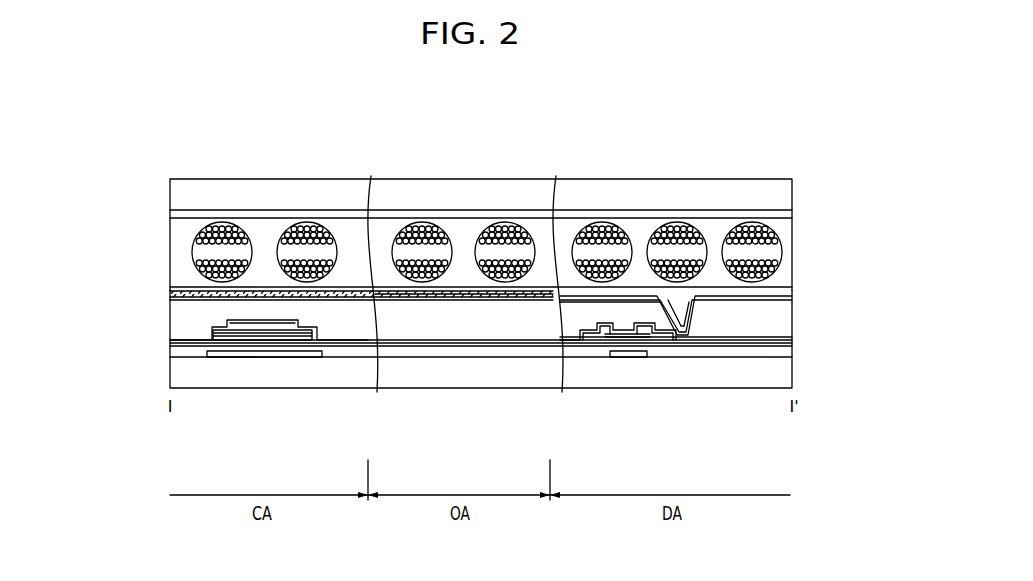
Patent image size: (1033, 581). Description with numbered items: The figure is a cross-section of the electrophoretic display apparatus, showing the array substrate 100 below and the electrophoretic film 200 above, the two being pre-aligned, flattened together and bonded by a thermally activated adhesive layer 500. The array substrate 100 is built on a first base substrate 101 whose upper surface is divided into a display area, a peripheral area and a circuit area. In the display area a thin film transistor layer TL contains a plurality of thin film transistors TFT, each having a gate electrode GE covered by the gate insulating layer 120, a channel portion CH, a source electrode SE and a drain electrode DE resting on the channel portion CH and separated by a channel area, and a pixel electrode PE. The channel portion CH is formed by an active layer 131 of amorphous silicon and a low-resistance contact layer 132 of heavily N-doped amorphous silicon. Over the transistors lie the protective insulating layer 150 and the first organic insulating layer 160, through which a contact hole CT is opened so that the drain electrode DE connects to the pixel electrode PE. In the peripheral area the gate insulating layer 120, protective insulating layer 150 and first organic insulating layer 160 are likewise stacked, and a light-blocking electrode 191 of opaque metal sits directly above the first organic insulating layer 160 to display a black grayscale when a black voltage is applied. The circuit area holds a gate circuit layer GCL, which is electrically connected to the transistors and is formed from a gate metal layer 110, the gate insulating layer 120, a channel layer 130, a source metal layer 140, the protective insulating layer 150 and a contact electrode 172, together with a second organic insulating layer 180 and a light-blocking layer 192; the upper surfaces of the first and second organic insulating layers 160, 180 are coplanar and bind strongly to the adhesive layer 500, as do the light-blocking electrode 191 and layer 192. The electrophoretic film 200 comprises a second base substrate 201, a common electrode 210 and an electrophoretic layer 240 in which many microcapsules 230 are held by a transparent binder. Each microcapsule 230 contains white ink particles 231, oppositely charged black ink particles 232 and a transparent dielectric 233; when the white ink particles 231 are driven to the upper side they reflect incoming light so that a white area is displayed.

The array substrate 100 is at (121, 277).
The first base substrate 101 is at (538, 376).
The gate metal layer 110 is at (260, 338).
The gate insulating layer 120 is at (192, 352).
The channel layer 130 is at (280, 437).
The active layer 131 is at (289, 336).
The low-resistance contact layer 132 is at (305, 337).
The source metal layer 140 is at (223, 347).
The protective insulating layer 150 is at (350, 343).
The first organic insulating layer 160 is at (468, 322).
The contact electrode 172 is at (262, 320).
The second organic insulating layer 180 is at (170, 318).
The light-blocking electrode 191 is at (496, 302).
The light-blocking layer 192 is at (170, 293).
The electrophoretic film 200 is at (164, 180).
The second base substrate 201 is at (785, 193).
The common electrode 210 is at (792, 212).
The microcapsules 230 is at (416, 222).
The white ink particles 231 is at (499, 236).
The black ink particles 232 is at (478, 268).
The transparent dielectric 233 is at (528, 248).
The electrophoretic layer 240 is at (796, 220).
The thermally activated adhesive layer 500 is at (347, 294).
The gate circuit layer GCL is at (164, 320).
The pixel electrode PE is at (792, 298).
The contact hole CT is at (687, 311).
The thin film transistor layer TL is at (834, 298).
The thin film transistor TFT is at (585, 438).
The source electrode SE is at (594, 337).
The gate electrode GE is at (627, 354).
The channel portion CH is at (642, 337).
The drain electrode DE is at (684, 337).